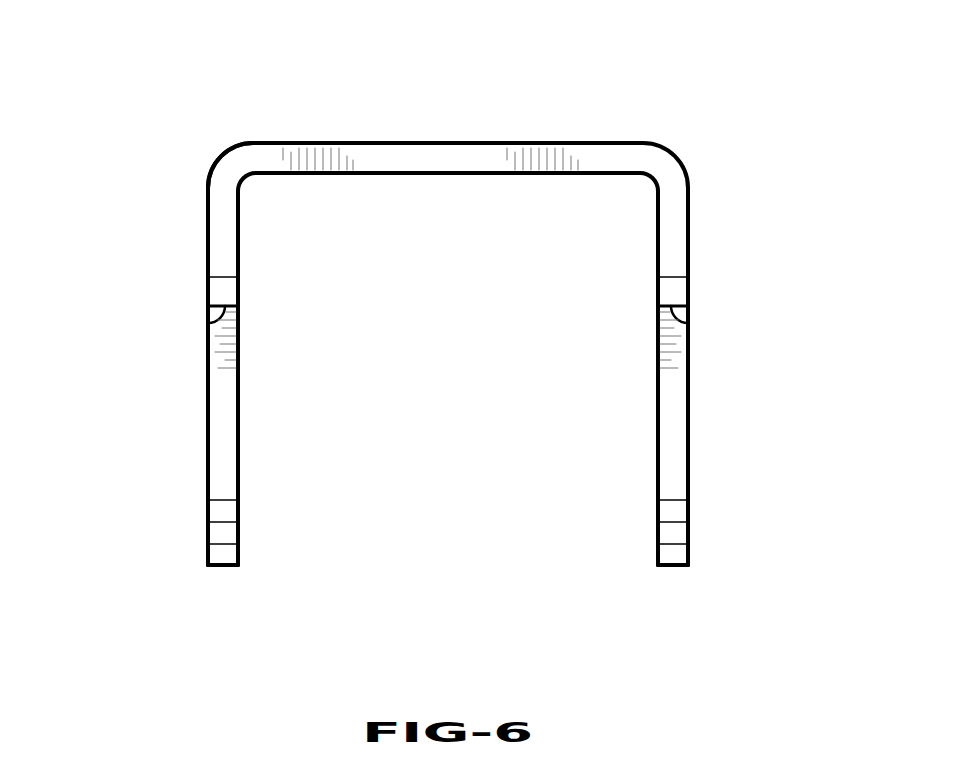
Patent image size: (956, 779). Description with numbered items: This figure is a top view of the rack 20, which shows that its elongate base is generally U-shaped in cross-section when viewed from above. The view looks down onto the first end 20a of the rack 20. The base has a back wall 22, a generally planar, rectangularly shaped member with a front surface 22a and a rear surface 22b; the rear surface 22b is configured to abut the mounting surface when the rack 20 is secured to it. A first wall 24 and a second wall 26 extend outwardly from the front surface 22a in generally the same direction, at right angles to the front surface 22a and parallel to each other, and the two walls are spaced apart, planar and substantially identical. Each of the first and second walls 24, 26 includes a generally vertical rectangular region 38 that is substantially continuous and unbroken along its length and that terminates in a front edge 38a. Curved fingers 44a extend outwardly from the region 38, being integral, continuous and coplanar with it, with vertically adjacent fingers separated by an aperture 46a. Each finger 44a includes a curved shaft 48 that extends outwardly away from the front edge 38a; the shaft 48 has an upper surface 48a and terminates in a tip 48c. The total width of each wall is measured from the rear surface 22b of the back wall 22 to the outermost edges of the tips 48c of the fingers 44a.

The rack 20 is at (650, 106).
The first end 20a is at (212, 138).
The back wall 22 is at (483, 140).
The front surface 22a is at (437, 175).
The rear surface 22b is at (423, 143).
The first wall 24 is at (204, 237).
The second wall 26 is at (693, 240).
The rectangular region 38 is at (225, 263).
The front edge 38a is at (210, 323).
The aperture 46a is at (213, 354).
The curved shaft 48 is at (204, 468).
The upper surface 48a is at (214, 419).
The tip 48c is at (214, 531).
The curved finger 44a is at (221, 570).